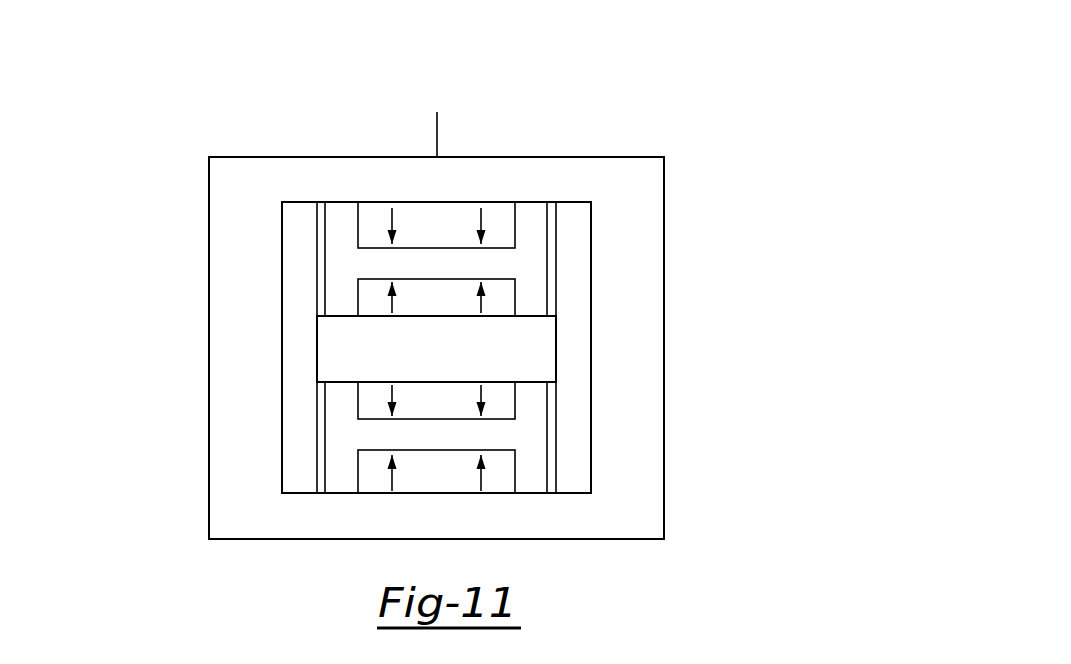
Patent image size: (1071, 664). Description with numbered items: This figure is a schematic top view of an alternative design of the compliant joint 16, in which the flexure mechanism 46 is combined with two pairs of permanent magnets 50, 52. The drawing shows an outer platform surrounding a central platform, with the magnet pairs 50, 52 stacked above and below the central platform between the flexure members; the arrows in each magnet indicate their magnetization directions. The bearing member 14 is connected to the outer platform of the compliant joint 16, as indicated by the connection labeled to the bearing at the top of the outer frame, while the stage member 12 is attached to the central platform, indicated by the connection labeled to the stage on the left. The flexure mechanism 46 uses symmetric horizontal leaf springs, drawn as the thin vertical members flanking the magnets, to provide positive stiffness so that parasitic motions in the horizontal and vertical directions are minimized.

The stage member 12 is at (348, 347).
The bearing member 14 is at (427, 80).
The compliant joint 16 is at (659, 121).
The flexure mechanism 46 is at (768, 328).
The pair of permanent magnets 50 is at (522, 258).
The pair of permanent magnets 52 is at (523, 433).